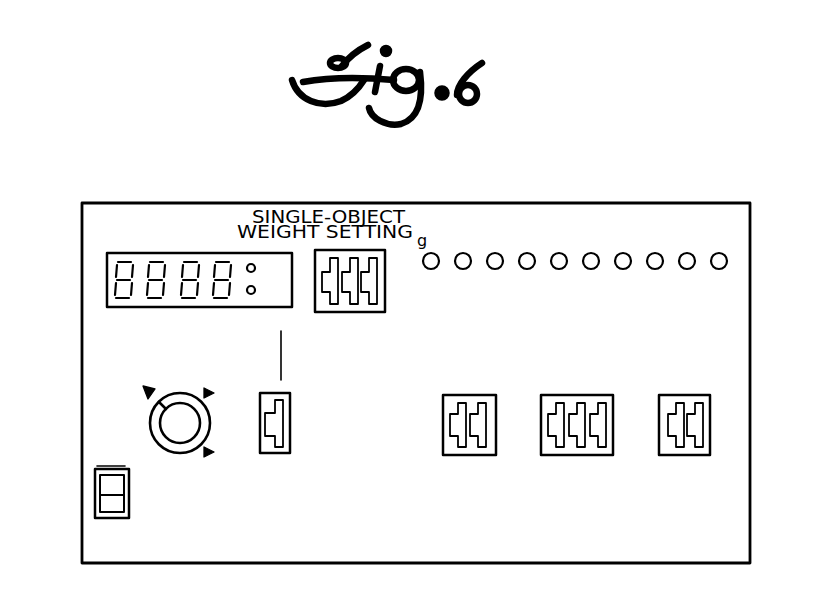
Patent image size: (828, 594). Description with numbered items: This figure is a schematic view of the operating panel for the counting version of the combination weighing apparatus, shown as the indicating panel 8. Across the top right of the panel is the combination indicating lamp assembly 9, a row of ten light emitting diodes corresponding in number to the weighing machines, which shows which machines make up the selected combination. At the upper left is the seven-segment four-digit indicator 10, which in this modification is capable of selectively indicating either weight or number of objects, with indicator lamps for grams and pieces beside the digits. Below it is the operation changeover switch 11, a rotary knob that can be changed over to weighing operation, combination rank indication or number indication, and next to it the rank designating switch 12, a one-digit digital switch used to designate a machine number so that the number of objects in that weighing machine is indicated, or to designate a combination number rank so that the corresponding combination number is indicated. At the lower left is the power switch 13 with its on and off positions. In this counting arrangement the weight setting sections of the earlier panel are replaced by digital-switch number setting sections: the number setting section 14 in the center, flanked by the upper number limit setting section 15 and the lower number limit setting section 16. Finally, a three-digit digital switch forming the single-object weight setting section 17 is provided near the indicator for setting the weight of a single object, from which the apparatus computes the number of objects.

The indicating panel 8 is at (651, 203).
The combination indicating lamp assembly 9 is at (705, 244).
The 7-segment 4-digit indicator 10 is at (132, 253).
The operation changeover switch 11 is at (157, 452).
The rank designating switch 12 is at (290, 432).
The power switch 13 is at (129, 497).
The number setting section 14 is at (572, 455).
The upper number limit setting section 15 is at (466, 455).
The lower number limit setting section 16 is at (681, 455).
The single-object weight setting section 17 is at (350, 313).